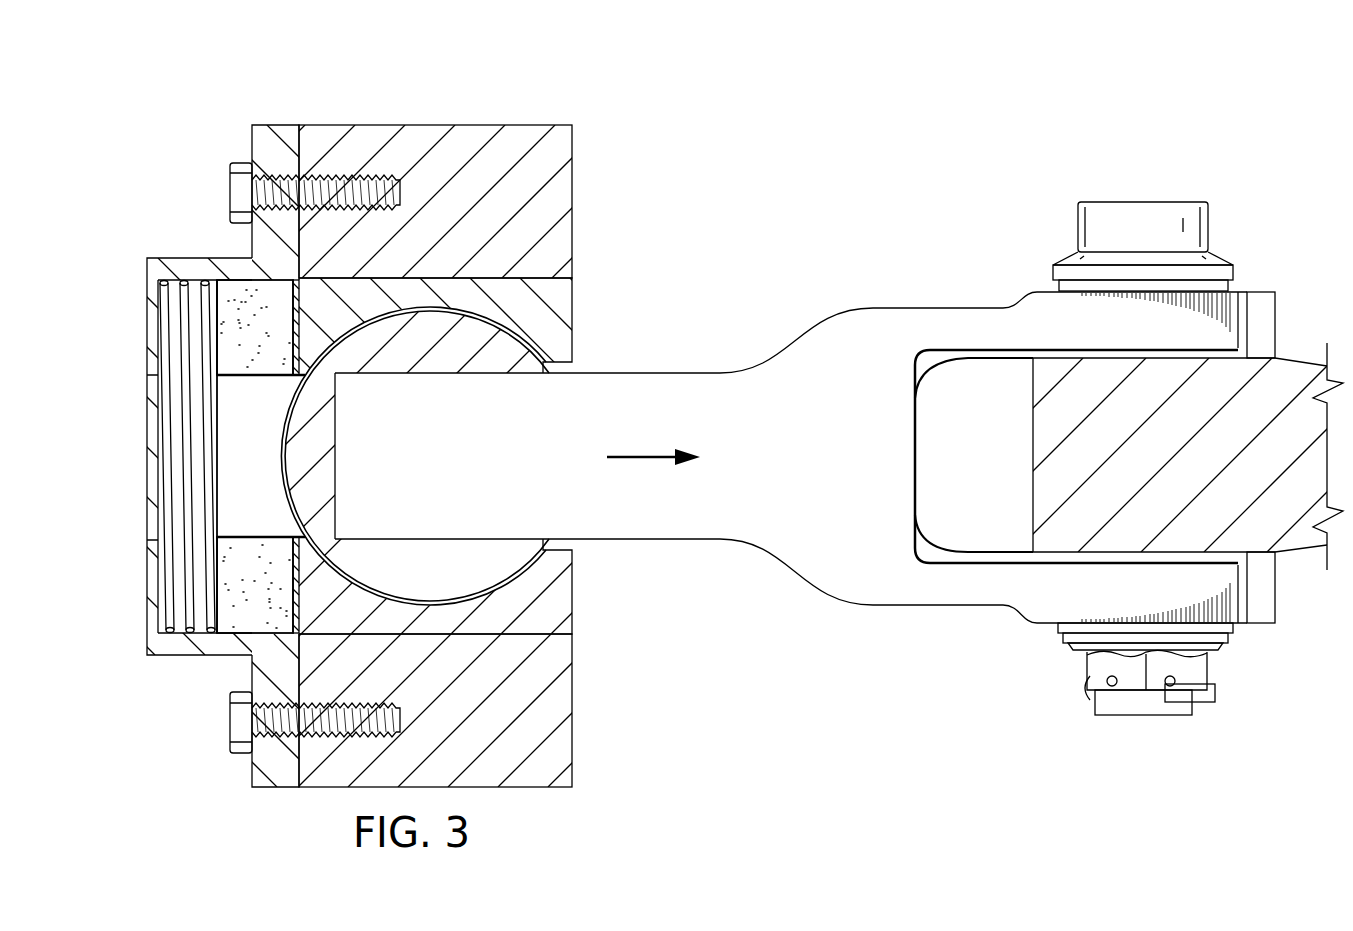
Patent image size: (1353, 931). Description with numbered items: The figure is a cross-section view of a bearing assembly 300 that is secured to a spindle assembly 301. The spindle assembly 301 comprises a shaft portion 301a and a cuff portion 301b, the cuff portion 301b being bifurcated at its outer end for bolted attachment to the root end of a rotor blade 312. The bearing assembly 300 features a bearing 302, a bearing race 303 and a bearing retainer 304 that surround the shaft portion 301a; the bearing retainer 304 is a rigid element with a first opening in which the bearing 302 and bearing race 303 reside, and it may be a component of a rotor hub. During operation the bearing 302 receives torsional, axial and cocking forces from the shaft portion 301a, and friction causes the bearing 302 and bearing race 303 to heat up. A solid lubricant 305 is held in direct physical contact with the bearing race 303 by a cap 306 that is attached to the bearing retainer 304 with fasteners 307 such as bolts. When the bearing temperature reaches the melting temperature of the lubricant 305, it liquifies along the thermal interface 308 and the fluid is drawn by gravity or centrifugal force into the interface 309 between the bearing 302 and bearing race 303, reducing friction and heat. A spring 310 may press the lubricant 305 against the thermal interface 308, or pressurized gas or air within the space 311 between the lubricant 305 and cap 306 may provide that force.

The bearing assembly 300 is at (496, 90).
The spindle assembly 301 is at (805, 456).
The shaft portion 301a is at (411, 455).
The cuff portion 301b is at (943, 597).
The bearing 302 is at (441, 365).
The bearing race 303 is at (563, 298).
The bearing retainer 304 is at (563, 192).
The solid lubricant 305 is at (280, 340).
The cap 306 is at (262, 145).
The fasteners 307 is at (230, 190).
The thermal interface 308 is at (290, 353).
The interface 309 is at (507, 348).
The spring 310 is at (178, 300).
The space 311 is at (180, 345).
The rotor blade 312 is at (1196, 473).